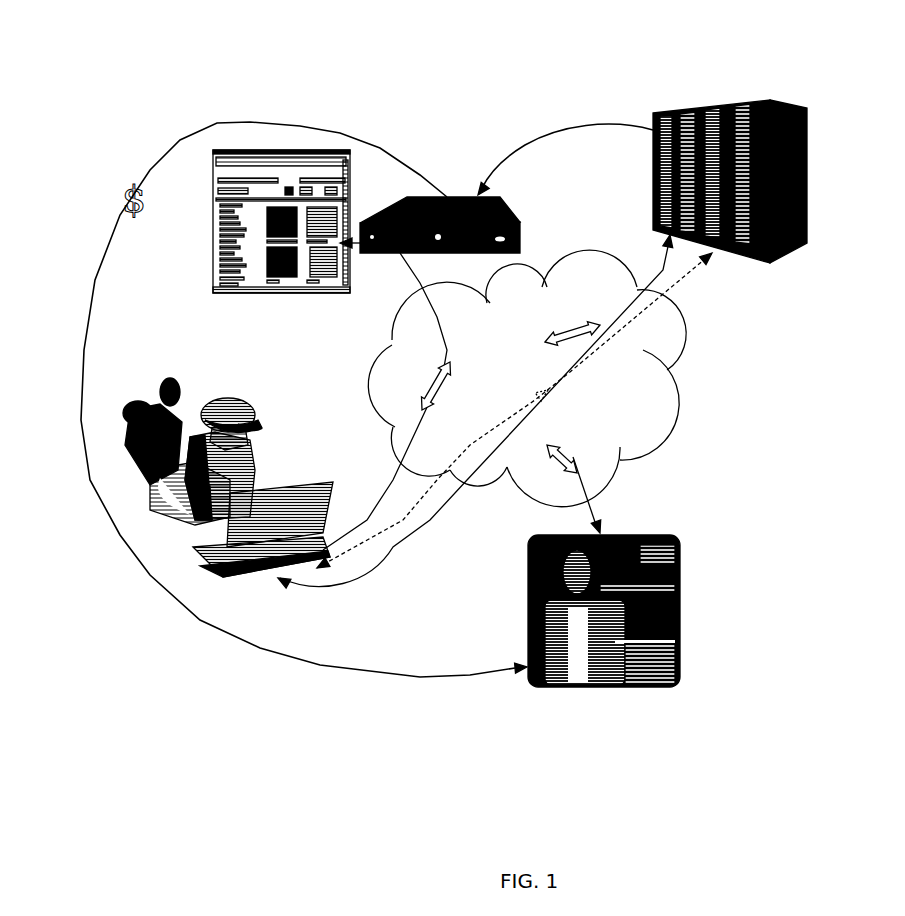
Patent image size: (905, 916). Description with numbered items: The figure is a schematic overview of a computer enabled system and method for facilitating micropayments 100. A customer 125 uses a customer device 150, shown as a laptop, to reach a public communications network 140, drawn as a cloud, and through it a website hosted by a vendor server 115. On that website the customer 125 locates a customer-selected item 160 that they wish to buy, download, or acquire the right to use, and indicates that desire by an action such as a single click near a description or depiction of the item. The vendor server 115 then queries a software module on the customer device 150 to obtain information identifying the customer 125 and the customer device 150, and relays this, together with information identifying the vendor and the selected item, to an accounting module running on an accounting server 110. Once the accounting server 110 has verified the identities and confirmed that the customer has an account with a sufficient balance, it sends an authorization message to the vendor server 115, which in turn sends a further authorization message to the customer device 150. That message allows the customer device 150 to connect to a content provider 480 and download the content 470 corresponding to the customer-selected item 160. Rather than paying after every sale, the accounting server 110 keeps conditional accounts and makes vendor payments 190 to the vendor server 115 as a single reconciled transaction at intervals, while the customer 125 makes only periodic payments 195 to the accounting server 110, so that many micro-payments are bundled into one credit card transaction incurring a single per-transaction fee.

The computer enabled system and method for facilitating micropayments 100 is at (689, 761).
The accounting server 110 is at (702, 108).
The vendor server 115 is at (468, 197).
The customer 125 is at (160, 500).
The public communications network 140 is at (678, 430).
The customer device 150 is at (257, 575).
The customer-selected item 160 is at (322, 250).
The vendor payments 190 is at (557, 130).
The periodic payments 195 is at (445, 262).
The content 470 is at (667, 655).
The content provider 480 is at (695, 642).